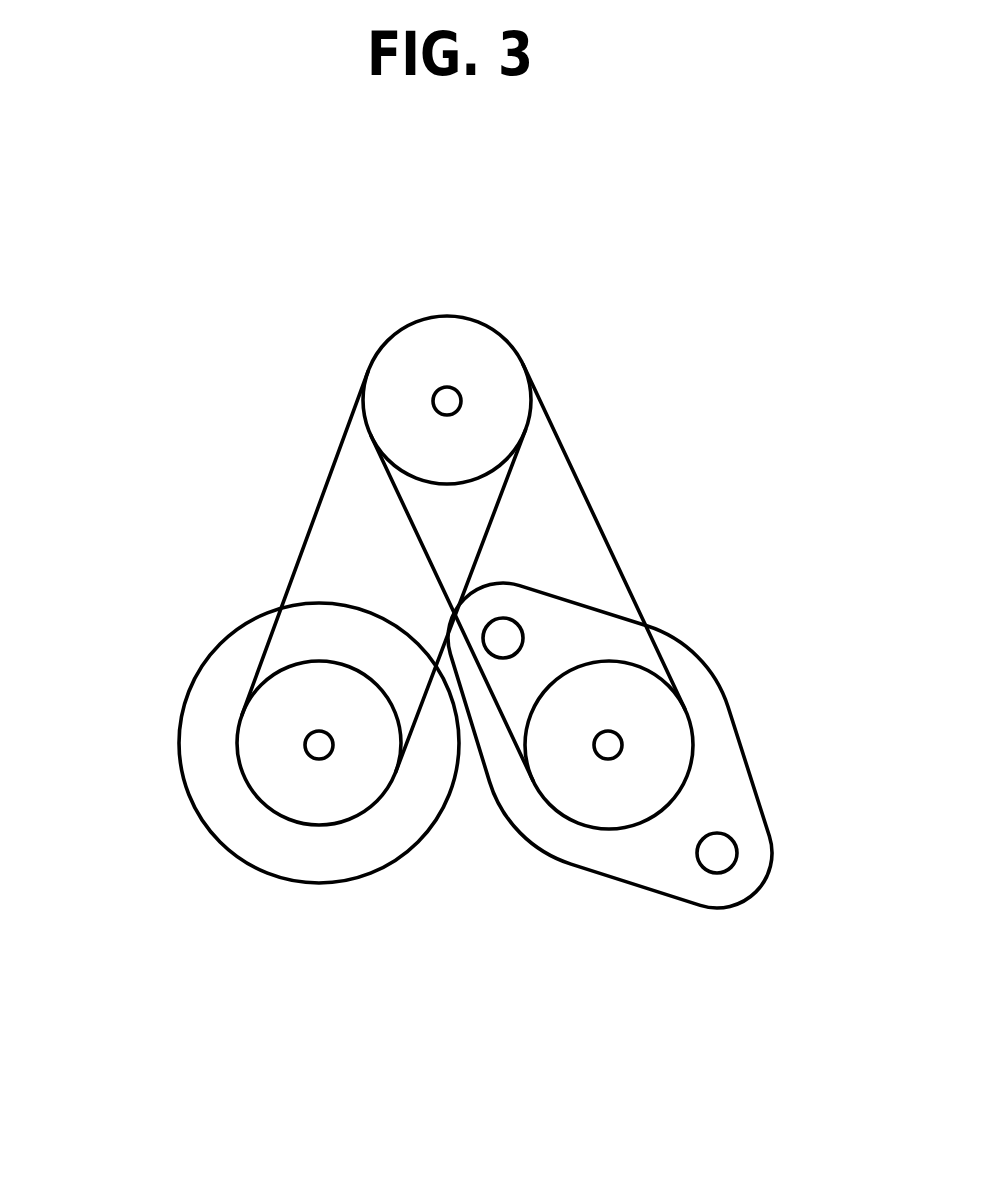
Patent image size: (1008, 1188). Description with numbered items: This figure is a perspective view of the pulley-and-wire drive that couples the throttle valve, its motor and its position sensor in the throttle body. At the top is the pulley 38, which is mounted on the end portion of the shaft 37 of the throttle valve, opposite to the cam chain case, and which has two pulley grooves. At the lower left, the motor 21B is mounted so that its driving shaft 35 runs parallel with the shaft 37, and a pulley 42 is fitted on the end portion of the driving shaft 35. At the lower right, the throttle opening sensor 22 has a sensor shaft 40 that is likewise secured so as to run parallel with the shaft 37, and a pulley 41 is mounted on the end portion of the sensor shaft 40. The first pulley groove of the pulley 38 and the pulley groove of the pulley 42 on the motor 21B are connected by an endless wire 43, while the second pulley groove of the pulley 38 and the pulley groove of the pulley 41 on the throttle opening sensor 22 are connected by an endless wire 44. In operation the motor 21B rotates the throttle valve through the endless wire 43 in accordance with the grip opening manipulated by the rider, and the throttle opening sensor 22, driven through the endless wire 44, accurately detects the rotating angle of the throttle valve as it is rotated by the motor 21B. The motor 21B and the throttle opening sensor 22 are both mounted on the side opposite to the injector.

The throttle opening sensor 22 is at (727, 690).
The motor 21B is at (303, 883).
The pulley 42 is at (238, 765).
The driving shaft 35 is at (306, 748).
The pulley 38 is at (445, 315).
The shaft 37 is at (456, 390).
The pulley 41 is at (688, 778).
The sensor shaft 40 is at (603, 759).
The endless wire 43 is at (317, 512).
The endless wire 44 is at (580, 480).